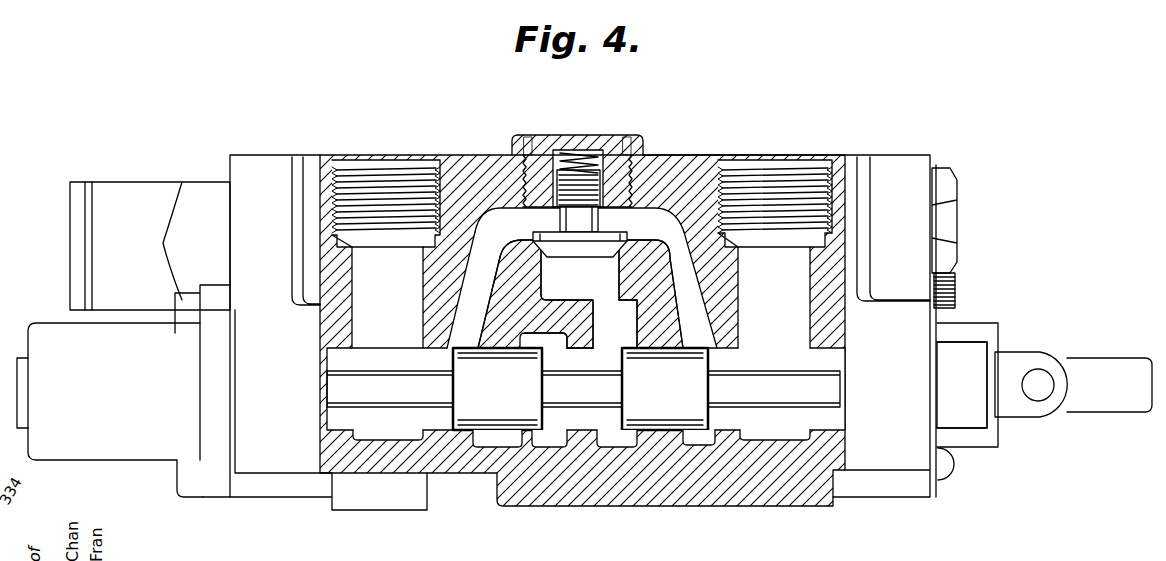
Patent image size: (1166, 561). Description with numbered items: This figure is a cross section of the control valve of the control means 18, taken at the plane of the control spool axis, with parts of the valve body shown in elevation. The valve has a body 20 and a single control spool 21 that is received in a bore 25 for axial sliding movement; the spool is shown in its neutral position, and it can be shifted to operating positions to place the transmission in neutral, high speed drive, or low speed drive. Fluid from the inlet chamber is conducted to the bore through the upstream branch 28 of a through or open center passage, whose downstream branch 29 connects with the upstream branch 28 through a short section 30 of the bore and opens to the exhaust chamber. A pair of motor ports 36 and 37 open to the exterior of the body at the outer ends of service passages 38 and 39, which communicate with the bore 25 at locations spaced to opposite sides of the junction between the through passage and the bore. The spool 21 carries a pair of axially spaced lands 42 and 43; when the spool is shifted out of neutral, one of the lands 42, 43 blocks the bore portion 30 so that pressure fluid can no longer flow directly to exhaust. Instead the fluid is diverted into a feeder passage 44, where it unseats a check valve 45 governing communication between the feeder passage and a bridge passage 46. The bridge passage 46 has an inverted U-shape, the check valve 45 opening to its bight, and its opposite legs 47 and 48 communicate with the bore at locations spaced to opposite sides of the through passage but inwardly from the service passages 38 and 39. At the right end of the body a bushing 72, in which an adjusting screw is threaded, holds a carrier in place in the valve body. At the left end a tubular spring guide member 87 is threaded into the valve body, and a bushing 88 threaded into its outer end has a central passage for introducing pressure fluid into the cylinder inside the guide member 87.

The control means 18 is at (258, 112).
The body 20 is at (266, 172).
The control spool 21 is at (958, 413).
The bore 25 is at (437, 426).
The upstream branch 28 is at (612, 437).
The downstream branch 29 is at (537, 440).
The short section of the bore 30 is at (565, 432).
The motor port 36 is at (396, 190).
The motor port 37 is at (774, 180).
The service passage 38 is at (369, 306).
The service passage 39 is at (759, 302).
The land 42 is at (476, 395).
The land 43 is at (649, 395).
The feeder passage 44 is at (602, 323).
The check valve 45 is at (578, 250).
The bridge passage 46 is at (510, 228).
The leg 47 is at (454, 306).
The leg 48 is at (676, 300).
The bushing 72 is at (963, 334).
The tubular spring guide member 87 is at (198, 205).
The bushing 88 is at (80, 190).